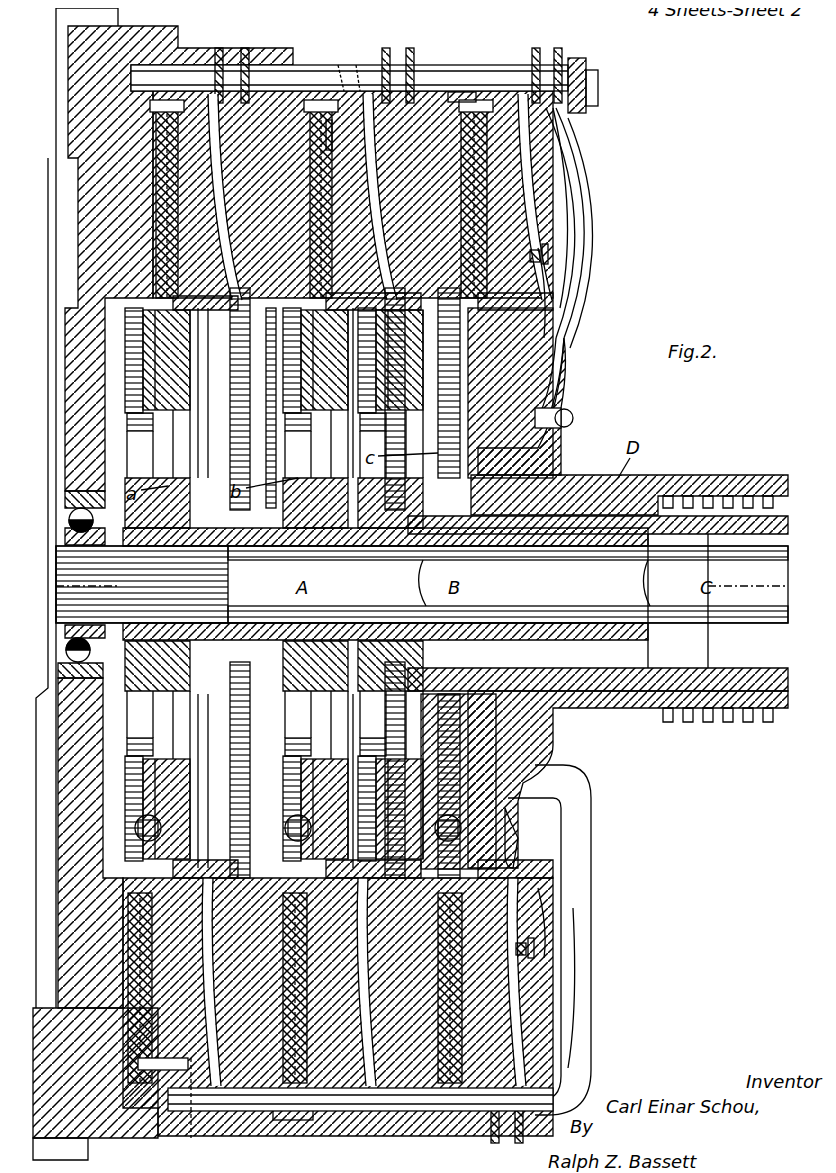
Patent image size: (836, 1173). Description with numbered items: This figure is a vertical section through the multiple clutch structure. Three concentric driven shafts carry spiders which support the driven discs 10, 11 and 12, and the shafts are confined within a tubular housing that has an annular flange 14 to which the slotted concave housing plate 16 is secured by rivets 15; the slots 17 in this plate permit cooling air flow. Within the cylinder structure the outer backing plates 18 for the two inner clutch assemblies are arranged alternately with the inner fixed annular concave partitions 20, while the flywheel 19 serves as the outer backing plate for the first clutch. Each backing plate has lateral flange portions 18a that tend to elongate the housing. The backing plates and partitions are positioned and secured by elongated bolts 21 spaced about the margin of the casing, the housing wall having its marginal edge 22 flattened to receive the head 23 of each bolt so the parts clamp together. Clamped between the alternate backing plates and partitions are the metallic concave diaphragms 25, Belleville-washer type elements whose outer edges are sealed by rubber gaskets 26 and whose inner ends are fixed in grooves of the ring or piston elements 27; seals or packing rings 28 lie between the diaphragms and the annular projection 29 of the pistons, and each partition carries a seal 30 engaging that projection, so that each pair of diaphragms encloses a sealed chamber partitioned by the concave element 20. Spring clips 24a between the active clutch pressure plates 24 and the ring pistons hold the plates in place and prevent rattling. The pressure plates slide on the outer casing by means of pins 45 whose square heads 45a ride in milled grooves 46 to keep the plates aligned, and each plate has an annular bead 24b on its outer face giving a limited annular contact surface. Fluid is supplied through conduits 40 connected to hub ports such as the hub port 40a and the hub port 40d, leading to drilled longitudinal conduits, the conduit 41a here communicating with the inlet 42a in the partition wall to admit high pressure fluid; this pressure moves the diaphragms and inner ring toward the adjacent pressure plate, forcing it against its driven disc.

The driven disc 10 is at (162, 92).
The driven disc 11 is at (312, 92).
The driven disc 12 is at (466, 92).
The annular flange 14 is at (548, 445).
The rivets 15 is at (563, 410).
The housing plate 16 is at (556, 355).
The slots 17 is at (582, 198).
The outer backing plates 18 is at (363, 545).
The lateral flange portions 18a is at (455, 84).
The flywheel 19 is at (78, 237).
The inner fixed annular concave partitions 20 is at (235, 152).
The elongated bolts 21 is at (430, 75).
The marginal edge 22 is at (566, 62).
The head 23 is at (588, 68).
The active clutch pressure plates 24 is at (168, 180).
The spring clips 24a is at (512, 835).
The annular bead 24b is at (162, 200).
The metallic concave diaphragms 25 is at (235, 128).
The rubber gaskets 26 is at (238, 40).
The ring or piston elements 27 is at (548, 305).
The seals or packing rings 28 is at (540, 285).
The annular projection 29 is at (533, 248).
The seal 30 is at (540, 240).
The conduits 40 is at (583, 848).
The hub port 40a is at (700, 700).
The hub port 40d is at (700, 508).
The longitudinal conduit 41a is at (360, 1101).
The inlet 42a is at (183, 1130).
The pins 45 is at (352, 55).
The square heads 45a is at (332, 55).
The grooves 46 is at (324, 140).